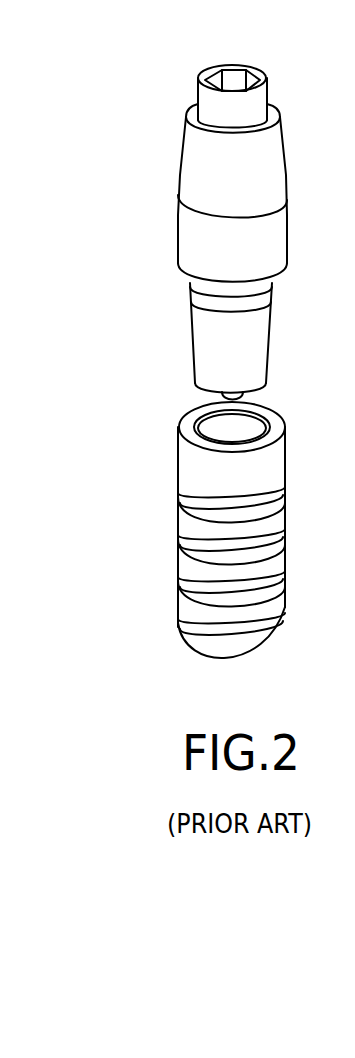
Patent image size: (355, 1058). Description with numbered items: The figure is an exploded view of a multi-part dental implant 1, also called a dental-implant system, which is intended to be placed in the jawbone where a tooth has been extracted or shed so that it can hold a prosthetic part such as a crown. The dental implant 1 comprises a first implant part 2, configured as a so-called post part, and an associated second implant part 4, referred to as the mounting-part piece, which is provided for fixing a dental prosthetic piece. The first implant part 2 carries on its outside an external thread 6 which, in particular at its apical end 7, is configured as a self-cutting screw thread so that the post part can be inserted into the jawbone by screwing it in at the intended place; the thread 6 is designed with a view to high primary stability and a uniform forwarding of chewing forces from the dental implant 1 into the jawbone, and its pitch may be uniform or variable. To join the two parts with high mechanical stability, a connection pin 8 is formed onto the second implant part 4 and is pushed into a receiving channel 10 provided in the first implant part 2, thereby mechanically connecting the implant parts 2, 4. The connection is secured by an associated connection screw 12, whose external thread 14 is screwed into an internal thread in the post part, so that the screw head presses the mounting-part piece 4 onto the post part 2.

The dental implant 1 is at (111, 310).
The first implant part 2 is at (277, 454).
The second implant part 4 is at (285, 164).
The external thread 6 is at (283, 513).
The apical end 7 is at (264, 648).
The connection pin 8 is at (268, 345).
The receiving channel 10 is at (258, 417).
The connection screw 12 is at (262, 100).
The external thread of the connection screw 14 is at (215, 398).